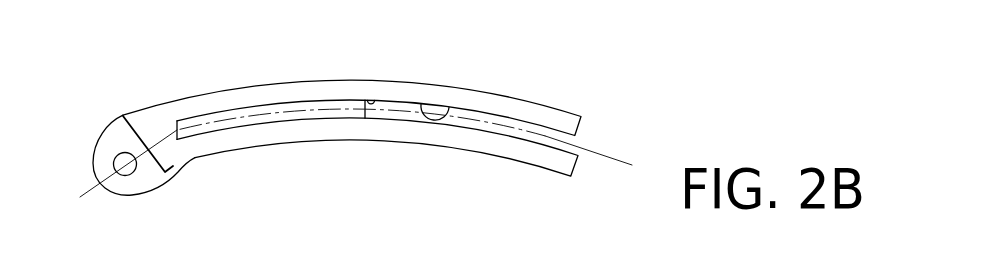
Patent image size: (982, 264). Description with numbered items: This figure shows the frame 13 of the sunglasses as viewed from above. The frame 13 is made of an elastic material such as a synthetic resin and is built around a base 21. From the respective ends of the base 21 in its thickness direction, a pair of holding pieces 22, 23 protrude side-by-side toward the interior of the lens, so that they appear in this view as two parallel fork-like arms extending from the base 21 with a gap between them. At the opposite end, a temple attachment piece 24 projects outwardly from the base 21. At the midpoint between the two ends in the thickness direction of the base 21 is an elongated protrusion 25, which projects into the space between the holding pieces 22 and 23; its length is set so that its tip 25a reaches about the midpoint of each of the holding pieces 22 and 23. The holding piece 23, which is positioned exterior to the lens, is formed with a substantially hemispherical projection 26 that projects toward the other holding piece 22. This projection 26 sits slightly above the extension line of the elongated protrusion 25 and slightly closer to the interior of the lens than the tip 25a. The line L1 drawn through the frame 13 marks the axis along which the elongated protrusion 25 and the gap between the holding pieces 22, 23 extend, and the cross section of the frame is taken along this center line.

The frame 13 is at (351, 112).
The base 21 is at (352, 112).
The holding piece 22 is at (387, 133).
The holding piece 23 is at (403, 88).
The temple attachment piece 24 is at (108, 148).
The elongated protrusion 25 is at (300, 117).
The tip 25a is at (377, 100).
The hemispherical projection 26 is at (437, 118).
The axis line L1 is at (602, 150).